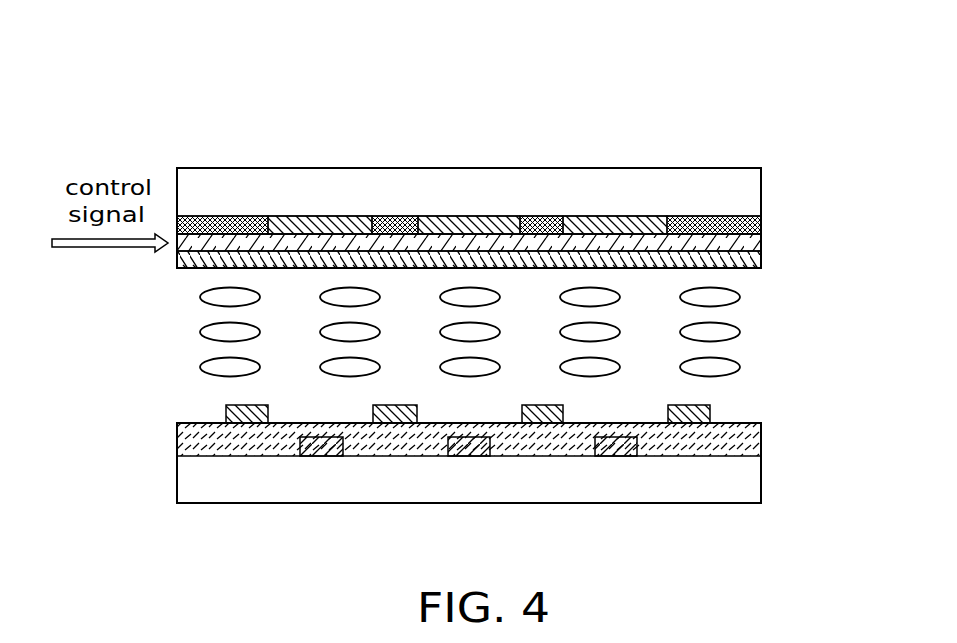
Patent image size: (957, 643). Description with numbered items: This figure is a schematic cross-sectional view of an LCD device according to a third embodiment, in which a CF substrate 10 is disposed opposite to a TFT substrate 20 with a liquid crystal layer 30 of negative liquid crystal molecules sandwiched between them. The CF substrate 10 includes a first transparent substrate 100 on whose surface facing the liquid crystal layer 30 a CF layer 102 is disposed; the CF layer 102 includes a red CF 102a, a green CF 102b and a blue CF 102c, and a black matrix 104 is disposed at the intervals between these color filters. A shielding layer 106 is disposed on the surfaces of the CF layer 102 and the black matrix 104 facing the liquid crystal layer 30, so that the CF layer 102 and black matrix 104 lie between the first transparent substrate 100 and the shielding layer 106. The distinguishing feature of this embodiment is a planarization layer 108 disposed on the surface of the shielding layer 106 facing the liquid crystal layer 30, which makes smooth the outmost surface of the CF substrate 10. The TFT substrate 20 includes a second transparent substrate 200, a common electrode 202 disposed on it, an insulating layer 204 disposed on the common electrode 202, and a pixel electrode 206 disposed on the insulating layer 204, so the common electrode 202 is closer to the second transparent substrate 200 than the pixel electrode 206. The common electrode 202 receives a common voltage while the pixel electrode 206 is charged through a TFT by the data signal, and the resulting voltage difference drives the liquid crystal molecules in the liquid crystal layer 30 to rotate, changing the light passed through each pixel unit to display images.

The color filter substrate 10 is at (212, 150).
The first transparent substrate 100 is at (743, 193).
The CF layer 102 is at (695, 108).
The red CF 102a is at (323, 216).
The green CF 102b is at (481, 216).
The blue CF 102c is at (640, 216).
The black matrix 104 is at (761, 222).
The shielding layer 106 is at (750, 246).
The planarization layer 108 is at (197, 256).
The liquid crystal layer 30 is at (748, 280).
The TFT substrate 20 is at (160, 483).
The second transparent substrate 200 is at (737, 480).
The common electrode 202 is at (318, 442).
The insulating layer 204 is at (188, 441).
The pixel electrode 206 is at (543, 412).